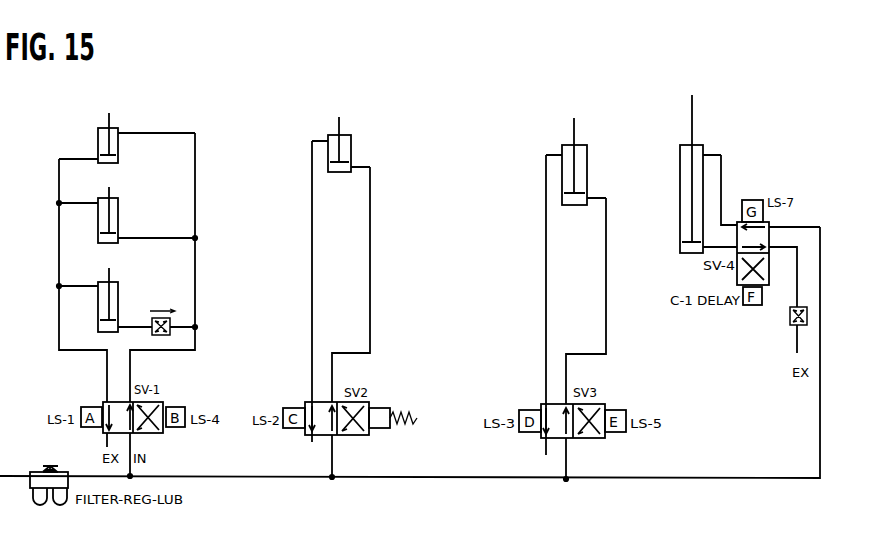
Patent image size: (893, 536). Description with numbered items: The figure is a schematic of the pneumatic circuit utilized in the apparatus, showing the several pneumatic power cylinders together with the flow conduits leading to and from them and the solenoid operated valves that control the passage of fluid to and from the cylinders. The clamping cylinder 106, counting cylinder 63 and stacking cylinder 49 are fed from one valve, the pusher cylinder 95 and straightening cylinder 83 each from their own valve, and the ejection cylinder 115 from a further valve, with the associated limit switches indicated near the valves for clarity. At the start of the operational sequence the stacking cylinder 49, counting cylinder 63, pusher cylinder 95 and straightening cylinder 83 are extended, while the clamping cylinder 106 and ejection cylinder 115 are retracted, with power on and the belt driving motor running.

The clamping cylinder 106 is at (118, 150).
The counting cylinder 63 is at (118, 214).
The stacking cylinder 49 is at (118, 300).
The pusher cylinder 95 is at (351, 155).
The straightening cylinder 83 is at (563, 160).
The ejection cylinder 115 is at (703, 158).